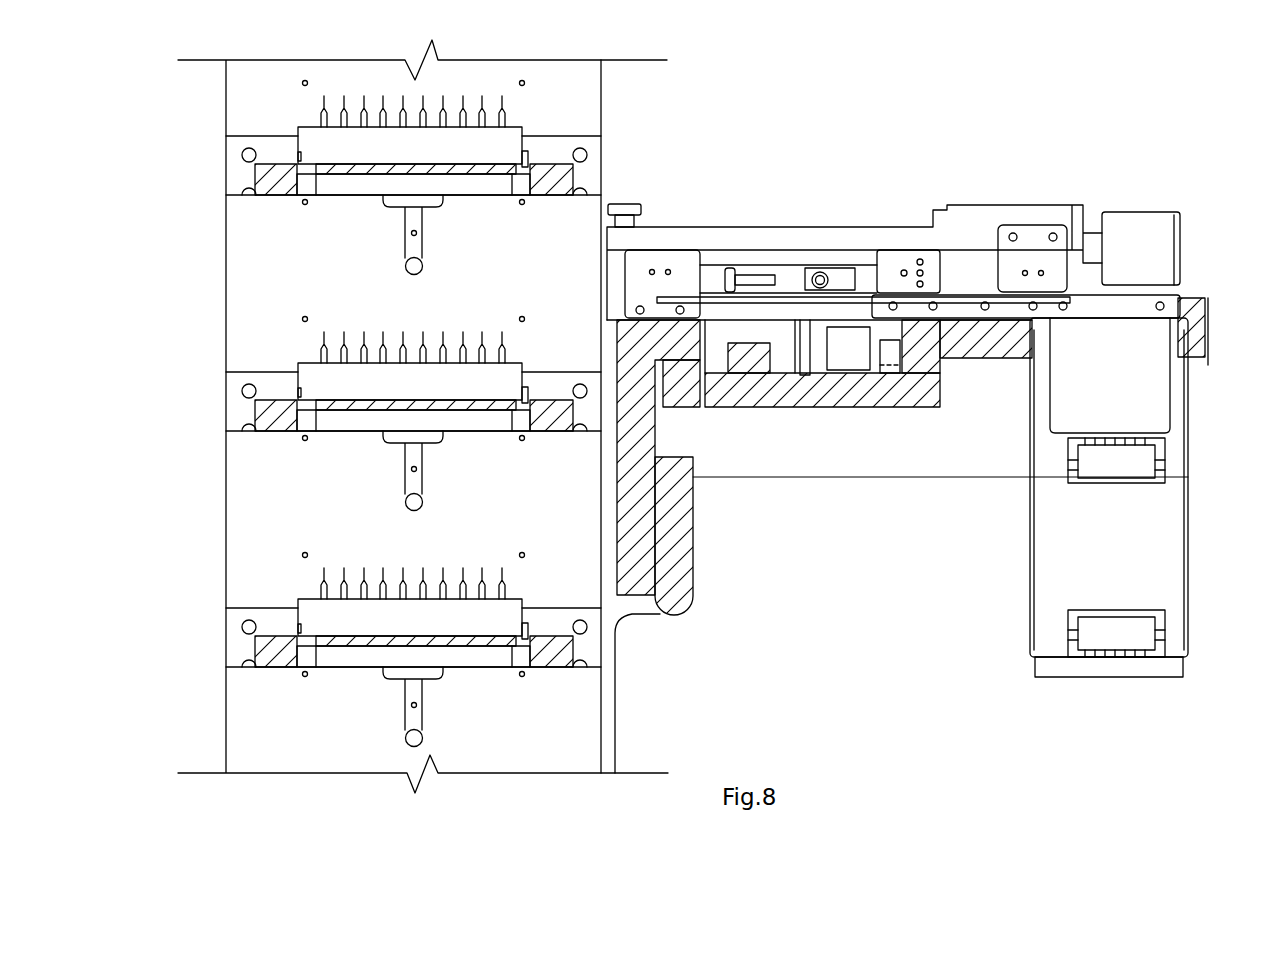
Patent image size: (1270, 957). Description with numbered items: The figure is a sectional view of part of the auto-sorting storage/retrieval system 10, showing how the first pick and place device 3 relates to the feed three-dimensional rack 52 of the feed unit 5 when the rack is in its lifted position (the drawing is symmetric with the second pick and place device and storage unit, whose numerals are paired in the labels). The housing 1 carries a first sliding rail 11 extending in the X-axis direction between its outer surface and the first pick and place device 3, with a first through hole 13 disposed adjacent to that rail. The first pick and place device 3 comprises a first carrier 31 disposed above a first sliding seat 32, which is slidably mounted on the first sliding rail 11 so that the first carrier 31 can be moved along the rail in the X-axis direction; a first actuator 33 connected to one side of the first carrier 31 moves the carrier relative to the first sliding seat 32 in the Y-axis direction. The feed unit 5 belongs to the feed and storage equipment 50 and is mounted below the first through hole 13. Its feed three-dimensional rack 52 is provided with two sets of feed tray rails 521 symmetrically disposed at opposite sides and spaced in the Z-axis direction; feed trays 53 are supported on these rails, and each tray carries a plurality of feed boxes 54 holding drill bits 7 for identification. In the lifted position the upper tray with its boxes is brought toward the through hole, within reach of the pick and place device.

The housing 1 is at (1199, 292).
The first pick and place device 3 is at (1026, 198).
The feed unit 5 is at (223, 272).
The drill bits 7 is at (405, 350).
The auto-sorting storage/retrieval system 10 is at (935, 442).
The first sliding rail 11 is at (878, 395).
The first through hole 13 is at (620, 343).
The first carrier 31 is at (782, 237).
The first sliding seat 32 is at (780, 312).
The first actuator 33 is at (1137, 238).
The feed and storage equipment 50 is at (610, 148).
The feed three-dimensional rack 52 is at (250, 518).
The feed trays 53 is at (268, 182).
The feed boxes 54 is at (380, 146).
The feed tray rails 521 is at (278, 388).